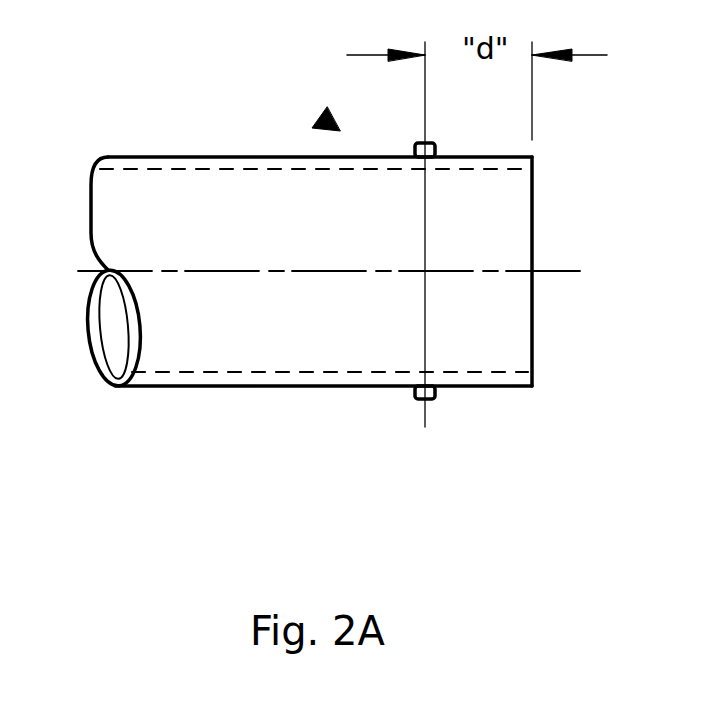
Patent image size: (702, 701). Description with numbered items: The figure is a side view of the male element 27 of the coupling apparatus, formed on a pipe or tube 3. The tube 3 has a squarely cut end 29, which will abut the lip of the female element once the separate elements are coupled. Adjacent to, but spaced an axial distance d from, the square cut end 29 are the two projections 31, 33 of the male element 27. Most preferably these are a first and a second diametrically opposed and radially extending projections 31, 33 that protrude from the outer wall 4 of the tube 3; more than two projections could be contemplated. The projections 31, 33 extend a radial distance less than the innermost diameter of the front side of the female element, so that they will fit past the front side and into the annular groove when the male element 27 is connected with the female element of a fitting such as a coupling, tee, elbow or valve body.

The pipe or tube 3 is at (158, 195).
The outer wall 4 is at (322, 387).
The male element 27 is at (330, 128).
The squarely cut end 29 is at (532, 352).
The first projection 31 is at (417, 146).
The second projection 33 is at (413, 400).